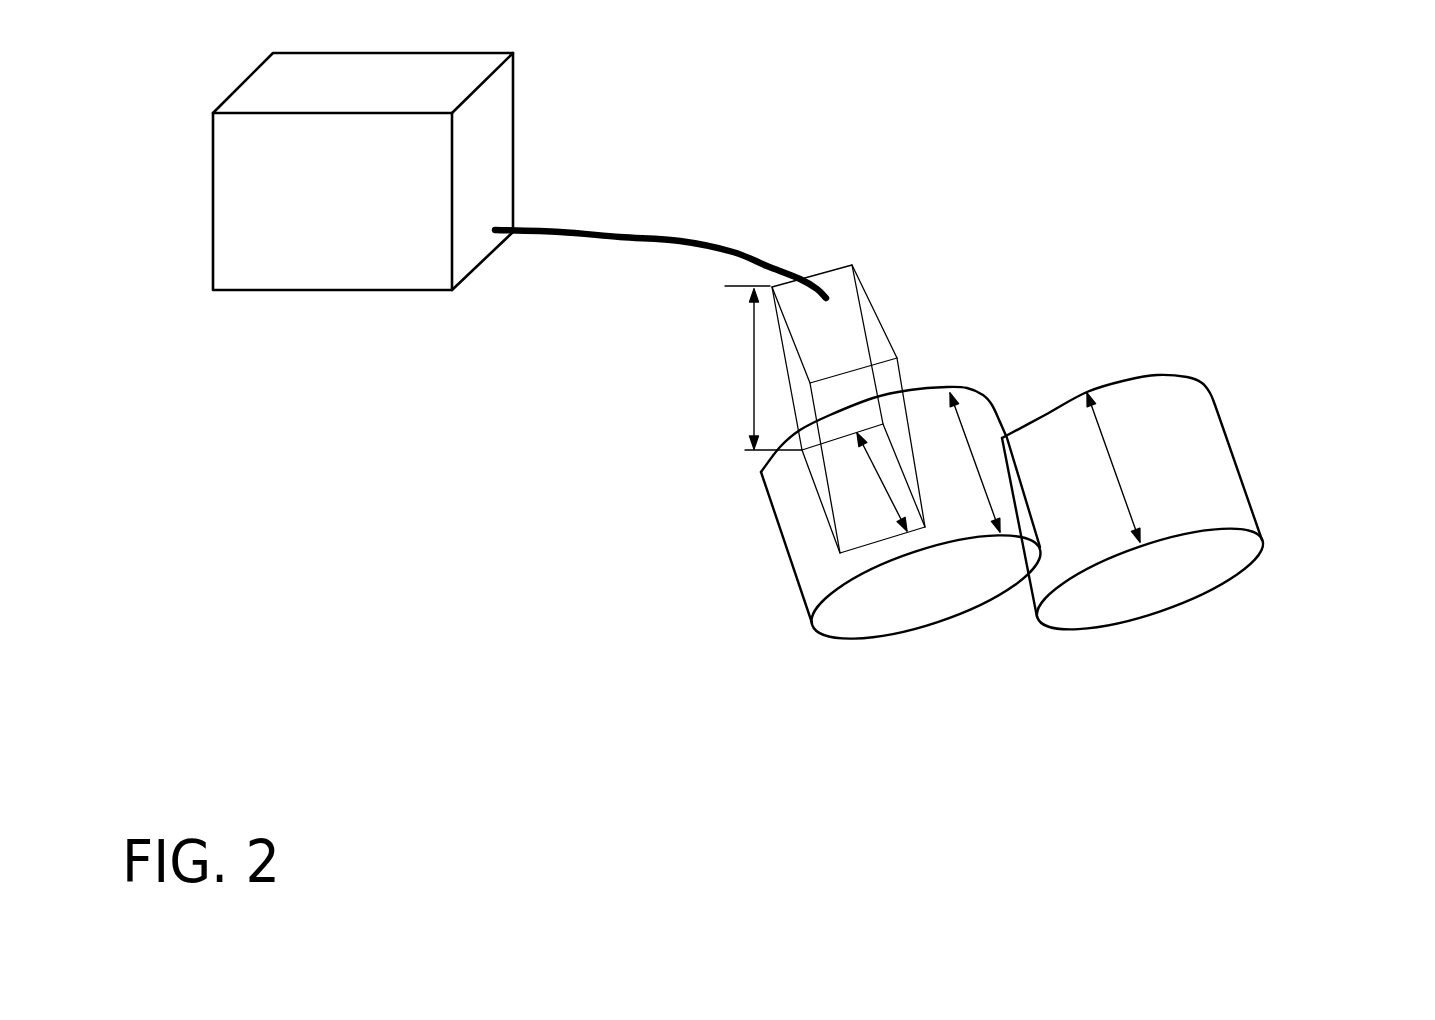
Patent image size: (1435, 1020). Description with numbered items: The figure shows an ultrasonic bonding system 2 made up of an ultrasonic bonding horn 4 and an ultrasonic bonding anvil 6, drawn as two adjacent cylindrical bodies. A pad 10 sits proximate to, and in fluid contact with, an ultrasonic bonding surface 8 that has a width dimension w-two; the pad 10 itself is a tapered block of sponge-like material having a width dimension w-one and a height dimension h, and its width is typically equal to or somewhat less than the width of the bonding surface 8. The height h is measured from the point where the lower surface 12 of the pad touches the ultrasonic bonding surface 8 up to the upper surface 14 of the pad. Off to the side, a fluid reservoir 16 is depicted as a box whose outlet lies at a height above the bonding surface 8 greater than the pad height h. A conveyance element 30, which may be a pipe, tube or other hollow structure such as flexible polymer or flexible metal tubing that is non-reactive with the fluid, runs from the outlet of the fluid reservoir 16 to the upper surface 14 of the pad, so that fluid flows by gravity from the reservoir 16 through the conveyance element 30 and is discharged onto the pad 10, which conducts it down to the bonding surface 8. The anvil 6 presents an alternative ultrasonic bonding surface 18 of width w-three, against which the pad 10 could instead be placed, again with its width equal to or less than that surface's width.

The ultrasonic bonding system 2 is at (1225, 123).
The ultrasonic bonding horn 4 is at (941, 629).
The ultrasonic bonding anvil 6 is at (1200, 604).
The ultrasonic bonding surface 8 is at (982, 420).
The pad 10 is at (905, 429).
The lower surface 12 is at (843, 502).
The upper surface 14 is at (872, 335).
The fluid reservoir 16 is at (337, 260).
The ultrasonic bonding surface 18 is at (1187, 458).
The conveyance element 30 is at (642, 242).